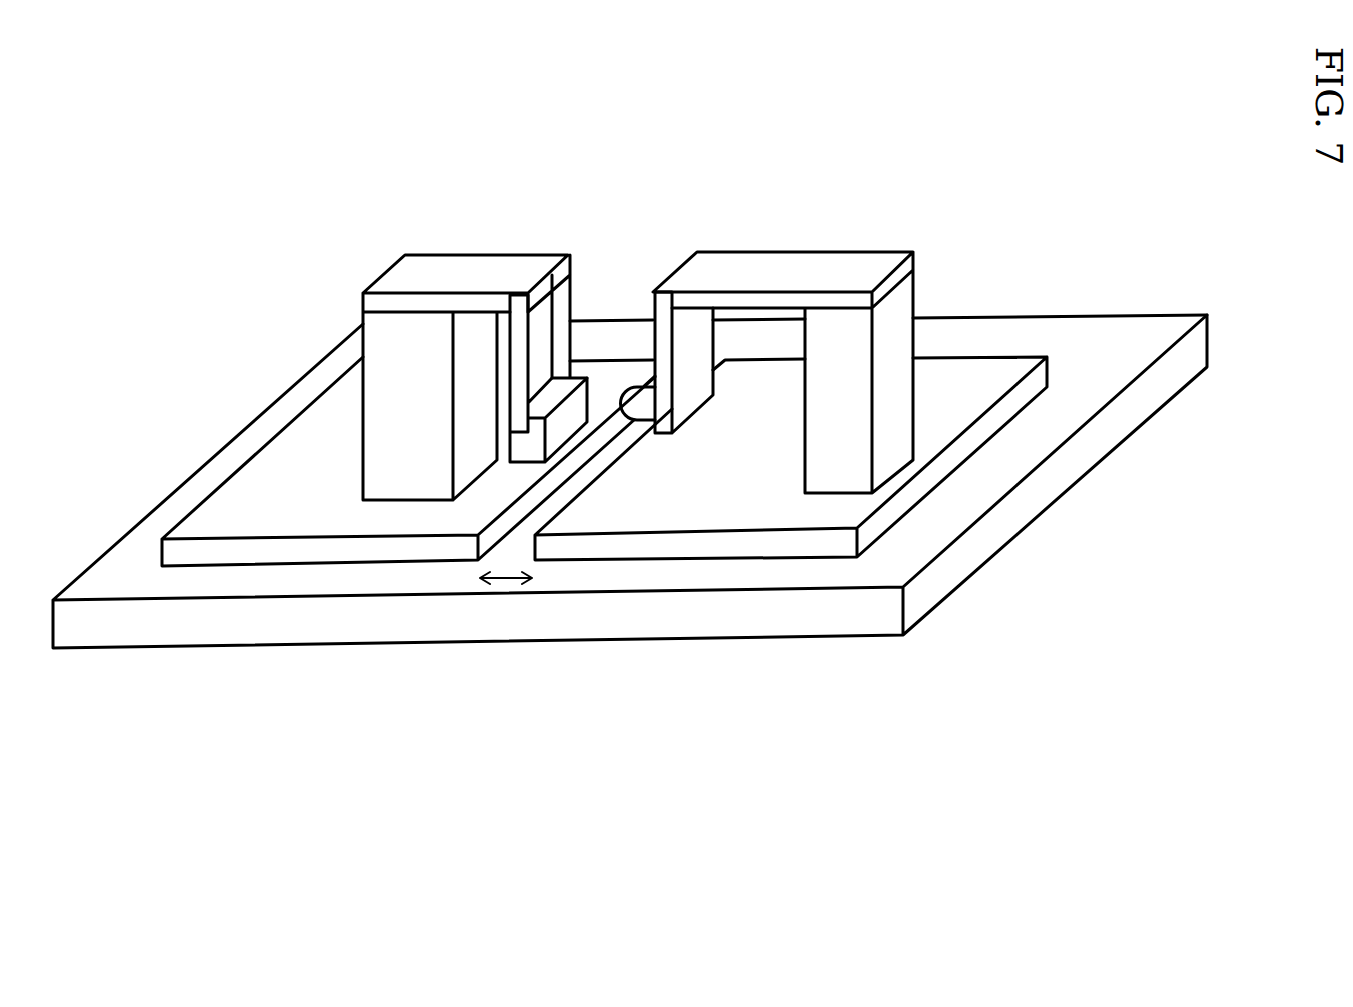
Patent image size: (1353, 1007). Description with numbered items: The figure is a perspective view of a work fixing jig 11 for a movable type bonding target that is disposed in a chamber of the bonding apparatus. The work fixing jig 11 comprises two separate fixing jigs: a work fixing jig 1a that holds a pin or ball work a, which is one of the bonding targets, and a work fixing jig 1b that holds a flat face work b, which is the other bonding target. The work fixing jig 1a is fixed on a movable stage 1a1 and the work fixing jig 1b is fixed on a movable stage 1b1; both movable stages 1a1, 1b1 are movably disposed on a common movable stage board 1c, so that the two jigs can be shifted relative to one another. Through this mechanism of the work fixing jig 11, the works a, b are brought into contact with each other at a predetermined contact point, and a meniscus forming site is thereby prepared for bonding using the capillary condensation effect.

The work fixing jig 11 is at (1022, 224).
The work fixing jig 1a is at (770, 267).
The work fixing jig 1b is at (467, 277).
The movable stage 1a1 is at (717, 502).
The movable stage 1b1 is at (285, 517).
The movable stage board 1c is at (407, 656).
The work a is at (640, 402).
The work b is at (577, 410).